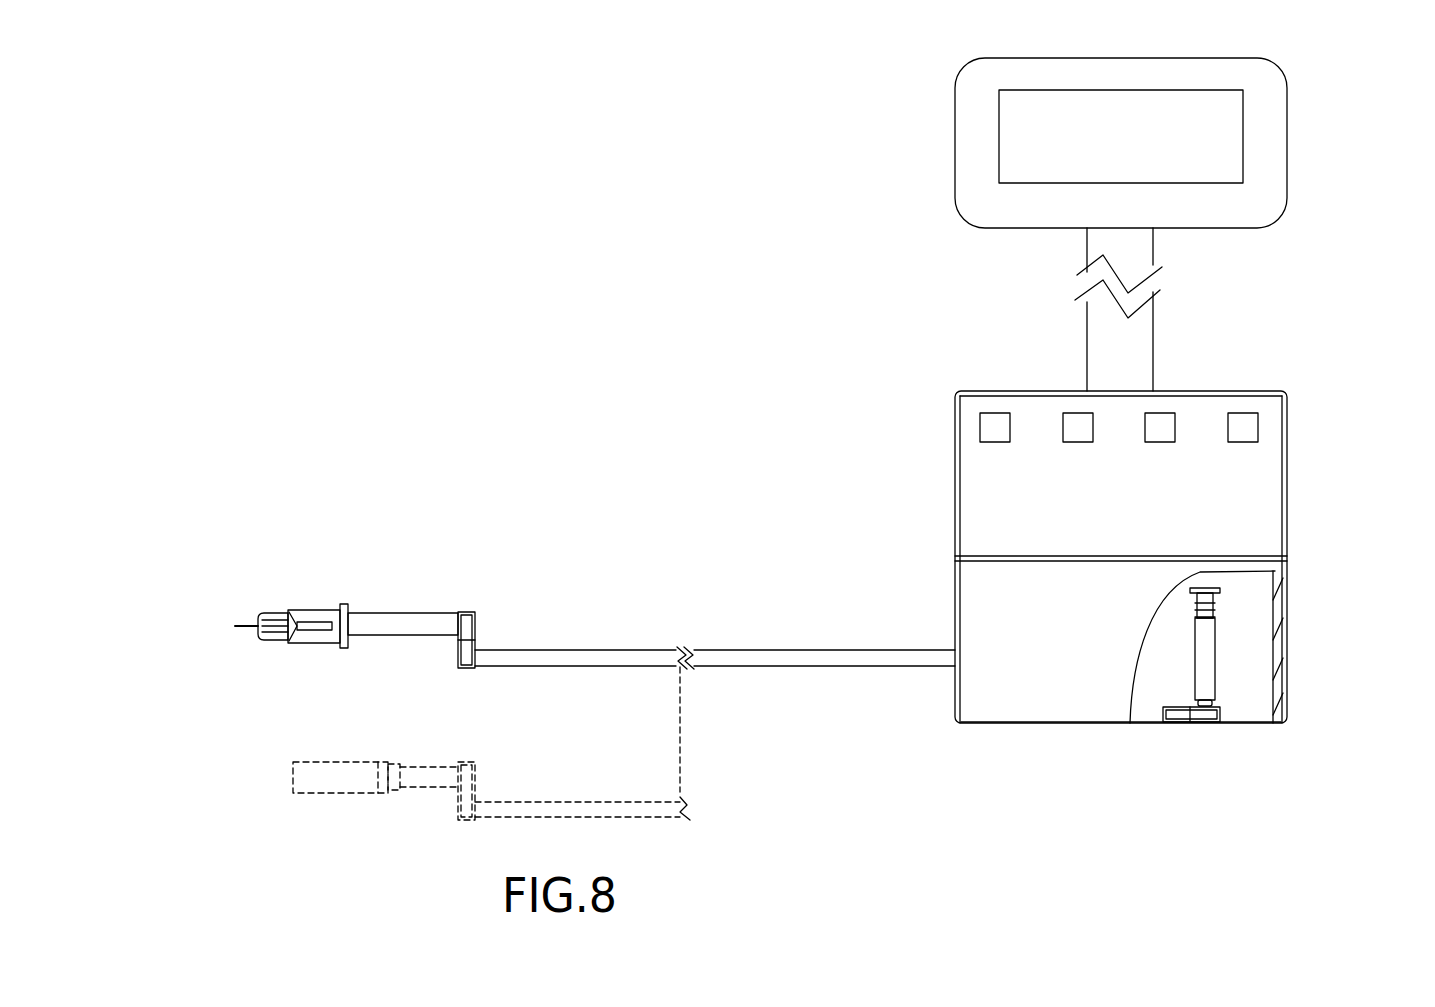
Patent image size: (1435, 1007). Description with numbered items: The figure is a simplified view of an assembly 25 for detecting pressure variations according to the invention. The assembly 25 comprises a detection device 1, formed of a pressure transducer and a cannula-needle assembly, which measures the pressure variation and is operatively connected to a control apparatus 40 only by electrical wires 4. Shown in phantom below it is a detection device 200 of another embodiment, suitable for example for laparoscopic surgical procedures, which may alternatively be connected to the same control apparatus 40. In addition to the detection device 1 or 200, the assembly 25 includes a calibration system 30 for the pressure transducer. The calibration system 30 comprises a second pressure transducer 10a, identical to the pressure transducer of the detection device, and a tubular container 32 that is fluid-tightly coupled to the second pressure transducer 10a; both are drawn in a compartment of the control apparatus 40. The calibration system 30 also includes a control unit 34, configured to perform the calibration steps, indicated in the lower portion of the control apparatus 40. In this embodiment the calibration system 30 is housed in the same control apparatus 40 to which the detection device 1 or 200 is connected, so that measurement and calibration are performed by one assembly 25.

The detection device 1 is at (357, 568).
The electrical wires 4 is at (602, 650).
The detection device 200 is at (260, 772).
The control apparatus 40 is at (1290, 467).
The control unit 34 is at (1043, 650).
The calibration system 30 is at (1253, 663).
The tubular container 32 is at (1217, 642).
The second pressure transducer 10a is at (1205, 713).
The assembly for detecting pressure variations 25 is at (995, 787).